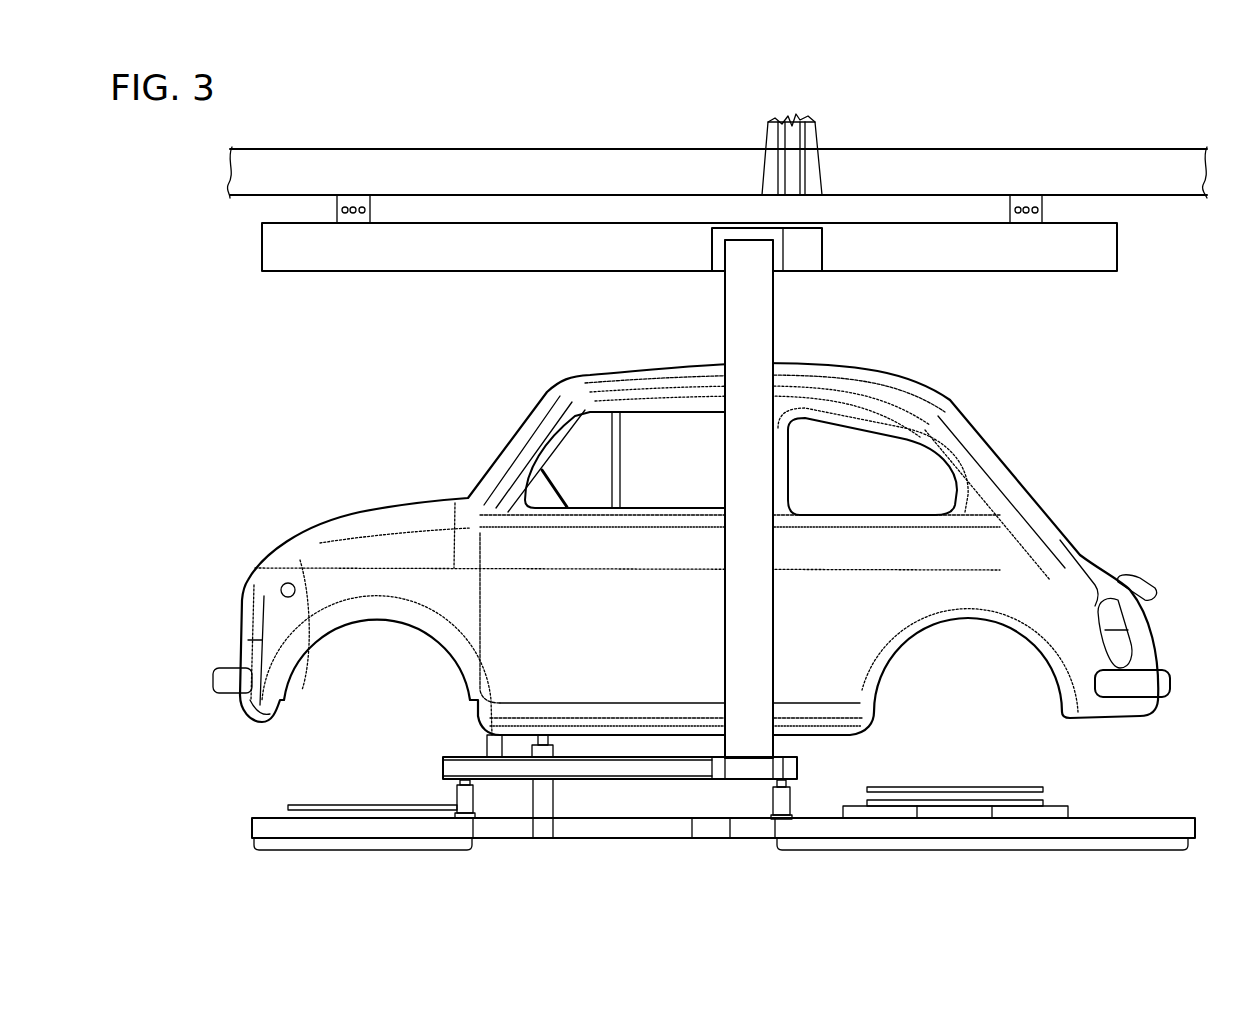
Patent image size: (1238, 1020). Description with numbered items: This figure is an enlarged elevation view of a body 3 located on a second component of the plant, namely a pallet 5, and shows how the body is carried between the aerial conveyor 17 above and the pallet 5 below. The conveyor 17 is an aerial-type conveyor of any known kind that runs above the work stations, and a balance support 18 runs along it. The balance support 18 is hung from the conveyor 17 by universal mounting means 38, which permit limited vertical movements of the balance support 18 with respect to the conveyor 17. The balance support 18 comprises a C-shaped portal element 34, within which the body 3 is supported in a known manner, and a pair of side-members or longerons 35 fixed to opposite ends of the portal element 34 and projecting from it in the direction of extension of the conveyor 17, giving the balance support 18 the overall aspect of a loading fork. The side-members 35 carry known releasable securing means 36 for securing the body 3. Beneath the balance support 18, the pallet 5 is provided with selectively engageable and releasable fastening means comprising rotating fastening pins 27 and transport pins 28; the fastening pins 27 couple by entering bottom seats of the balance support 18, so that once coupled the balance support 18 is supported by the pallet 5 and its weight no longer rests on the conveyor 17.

The conveyor 17 is at (1018, 144).
The universal mounting means 38 is at (856, 258).
The balance support 18 is at (748, 310).
The body 3 is at (1104, 452).
The C-shaped portal element 34 is at (740, 560).
The side-member or longeron 35 is at (617, 770).
The releasable securing means 36 is at (487, 745).
The rotating fastening pin 27 is at (457, 795).
The transport pin 28 is at (538, 797).
The pallet 5 is at (1152, 822).